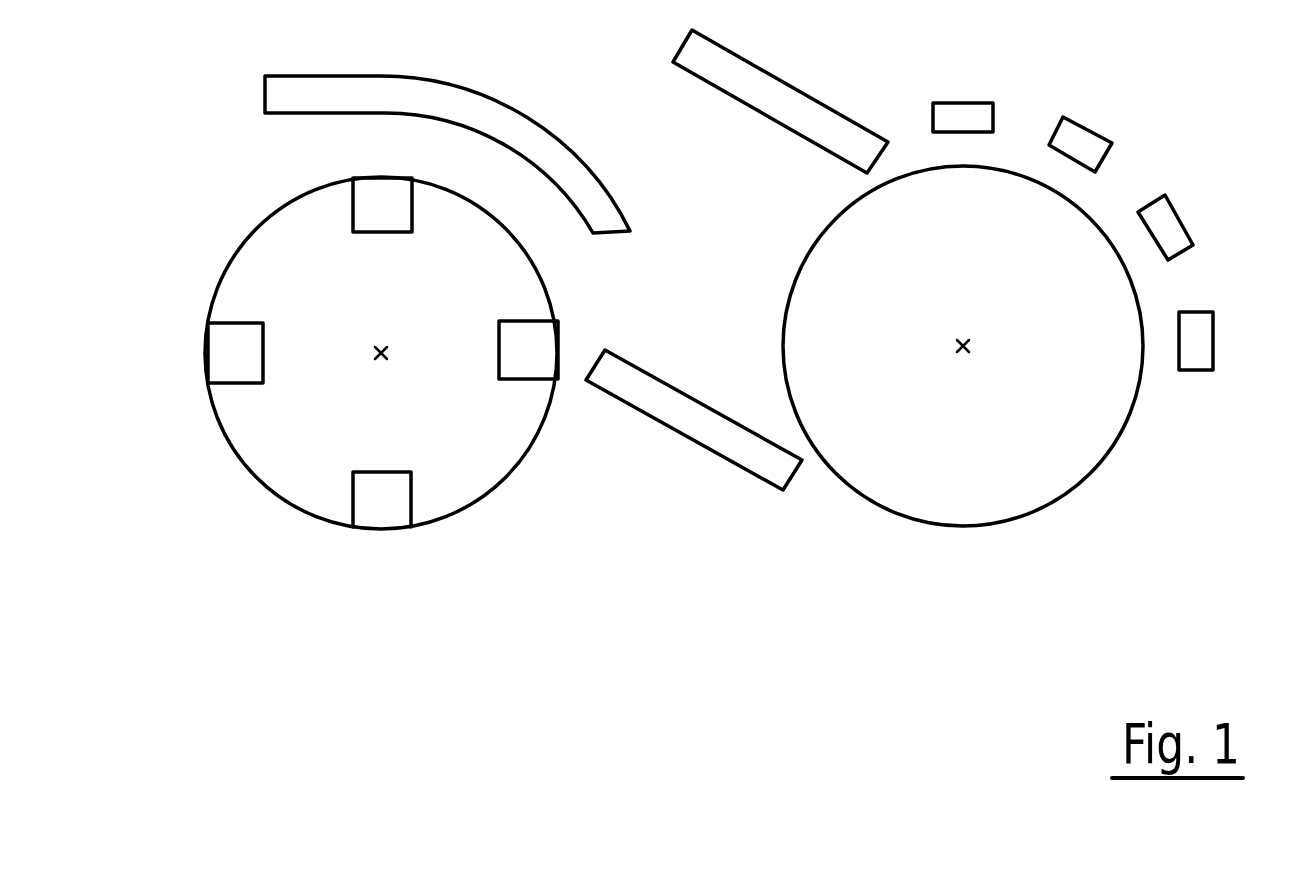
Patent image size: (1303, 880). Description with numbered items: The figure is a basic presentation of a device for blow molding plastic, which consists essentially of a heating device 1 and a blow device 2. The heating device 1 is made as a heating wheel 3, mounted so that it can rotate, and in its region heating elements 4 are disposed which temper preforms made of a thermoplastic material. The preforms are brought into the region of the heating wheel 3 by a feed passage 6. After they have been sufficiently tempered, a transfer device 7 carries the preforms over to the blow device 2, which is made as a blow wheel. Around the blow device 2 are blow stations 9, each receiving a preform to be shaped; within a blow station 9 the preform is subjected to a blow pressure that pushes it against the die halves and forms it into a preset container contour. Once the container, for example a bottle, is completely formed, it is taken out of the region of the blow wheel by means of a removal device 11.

The heating device 1 is at (1070, 458).
The blow device 2 is at (462, 455).
The heating wheel 3 is at (907, 203).
The heating elements 4 is at (985, 98).
The feed passage 6 is at (802, 88).
The transfer device 7 is at (688, 442).
The blow stations 9 is at (382, 198).
The removal device 11 is at (500, 97).